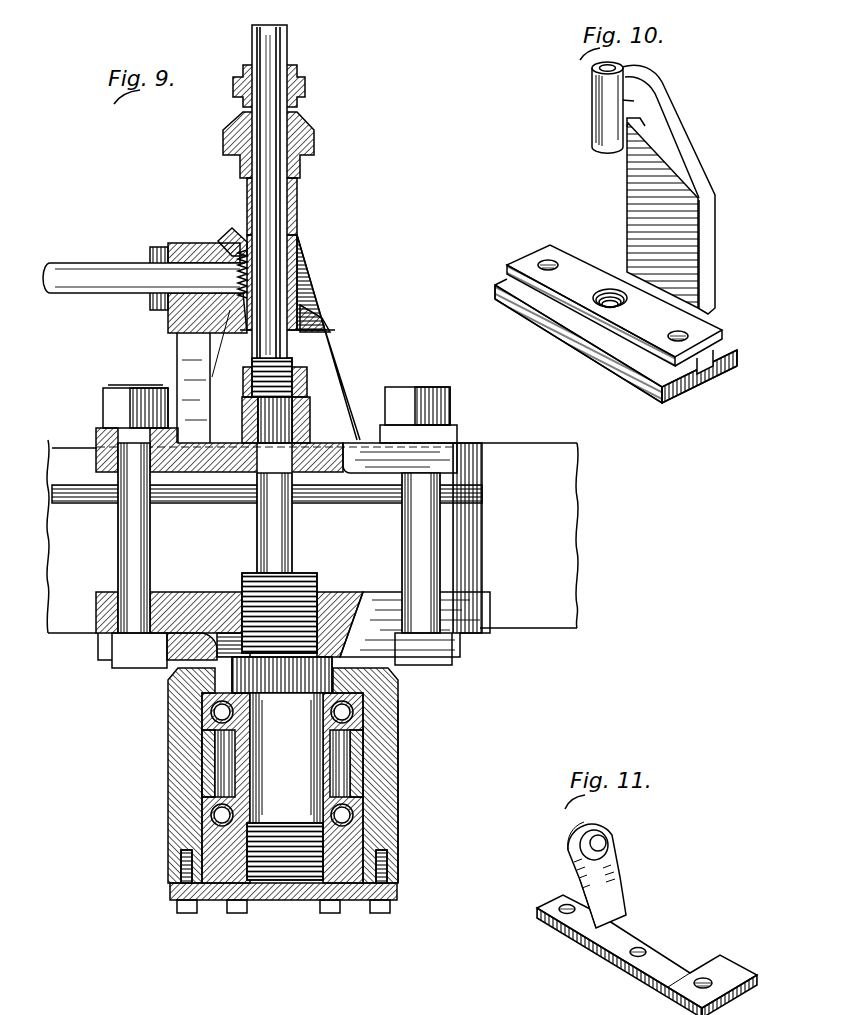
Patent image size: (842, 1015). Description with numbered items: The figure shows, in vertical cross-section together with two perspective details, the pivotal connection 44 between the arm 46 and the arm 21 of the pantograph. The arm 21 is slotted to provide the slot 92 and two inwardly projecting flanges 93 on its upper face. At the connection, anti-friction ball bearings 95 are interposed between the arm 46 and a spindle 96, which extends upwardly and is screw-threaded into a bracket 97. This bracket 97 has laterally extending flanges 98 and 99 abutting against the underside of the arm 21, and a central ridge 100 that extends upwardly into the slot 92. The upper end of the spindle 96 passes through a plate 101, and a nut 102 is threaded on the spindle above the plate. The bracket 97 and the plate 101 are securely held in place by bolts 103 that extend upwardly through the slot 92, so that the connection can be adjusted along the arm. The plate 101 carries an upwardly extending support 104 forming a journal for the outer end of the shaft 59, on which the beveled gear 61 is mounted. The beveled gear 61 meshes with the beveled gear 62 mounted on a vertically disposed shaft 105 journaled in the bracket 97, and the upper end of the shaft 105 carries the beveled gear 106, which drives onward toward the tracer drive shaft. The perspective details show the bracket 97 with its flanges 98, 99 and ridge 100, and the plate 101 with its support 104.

In FIG. 9, the arm 21 is at (568, 627).
In FIG. 9, the pivotal connection 44 is at (395, 752).
In FIG. 9, the arm 46 is at (406, 846).
In FIG. 9, the shaft 59 is at (143, 284).
In FIG. 9, the beveled gear 61 is at (232, 237).
In FIG. 9, the beveled gear 62 is at (320, 326).
In FIG. 9, the slot 92 is at (70, 447).
In FIG. 9, the inwardly projecting flanges 93 is at (50, 483).
In FIG. 9, the anti-friction ball bearings 95 is at (352, 714).
In FIG. 9, the spindle 96 is at (285, 786).
In FIG. 9, the bracket 97 is at (312, 283).
In FIG. 10, the bracket 97 is at (614, 264).
In FIG. 10, the flange 98 is at (736, 348).
In FIG. 10, the flange 99 is at (658, 386).
In FIG. 9, the central ridge 100 is at (122, 598).
In FIG. 10, the central ridge 100 is at (652, 349).
In FIG. 9, the plate 101 is at (356, 440).
In FIG. 11, the plate 101 is at (648, 932).
In FIG. 9, the nut 102 is at (308, 373).
In FIG. 9, the bolts 103 is at (130, 668).
In FIG. 9, the support 104 is at (176, 351).
In FIG. 11, the support 104 is at (619, 874).
In FIG. 9, the shaft 105 is at (297, 205).
In FIG. 9, the beveled gear 106 is at (314, 126).